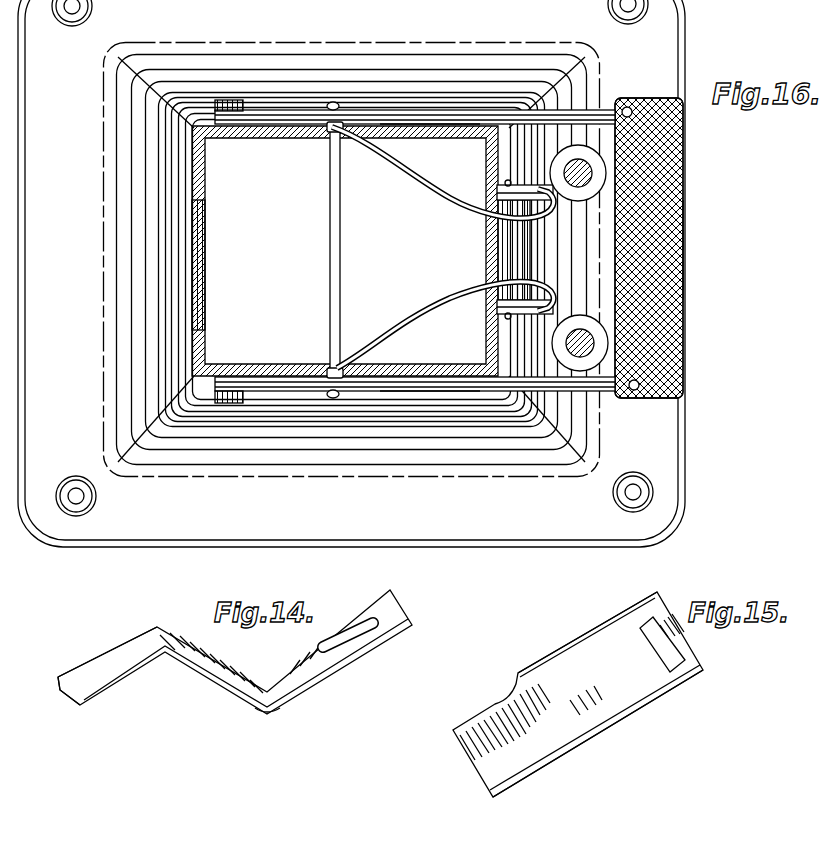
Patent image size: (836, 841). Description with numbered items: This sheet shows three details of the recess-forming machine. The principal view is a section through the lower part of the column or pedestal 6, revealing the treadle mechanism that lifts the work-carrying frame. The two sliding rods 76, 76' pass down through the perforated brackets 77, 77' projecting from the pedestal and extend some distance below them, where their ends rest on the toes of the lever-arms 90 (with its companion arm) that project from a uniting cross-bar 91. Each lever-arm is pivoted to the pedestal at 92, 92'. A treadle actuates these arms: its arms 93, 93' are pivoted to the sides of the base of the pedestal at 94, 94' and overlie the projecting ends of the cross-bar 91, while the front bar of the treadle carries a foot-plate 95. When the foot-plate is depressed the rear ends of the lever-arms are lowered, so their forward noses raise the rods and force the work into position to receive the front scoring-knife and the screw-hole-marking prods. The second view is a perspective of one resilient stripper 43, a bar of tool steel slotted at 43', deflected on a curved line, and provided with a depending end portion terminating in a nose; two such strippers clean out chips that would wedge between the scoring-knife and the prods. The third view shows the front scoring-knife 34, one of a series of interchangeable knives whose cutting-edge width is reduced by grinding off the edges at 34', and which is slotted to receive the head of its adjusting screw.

In FIG. 16, the column or pedestal 6 is at (351, 273).
In FIG. 16, the sliding rod 76 is at (557, 365).
In FIG. 16, the sliding rod 76' is at (554, 240).
In FIG. 16, the projecting bracket 77 is at (587, 329).
In FIG. 16, the projecting bracket 77' is at (596, 140).
In FIG. 16, the lever-arm 90 is at (470, 212).
In FIG. 16, the uniting cross-bar 91 is at (330, 238).
In FIG. 16, the pivot 92 is at (415, 440).
In FIG. 16, the pivot 92' is at (415, 80).
In FIG. 16, the treadle arm 93 is at (433, 445).
In FIG. 16, the treadle arm 93' is at (435, 76).
In FIG. 16, the pivot 94 is at (235, 440).
In FIG. 16, the clip 94' is at (246, 71).
In FIG. 16, the foot-plate 95 is at (693, 282).
In FIG. 14, the resilient stripper 43 is at (235, 652).
In FIG. 14, the slot 43' is at (357, 665).
In FIG. 15, the front scoring-knife 34 is at (578, 694).
In FIG. 15, the reduced edge 34' is at (598, 694).